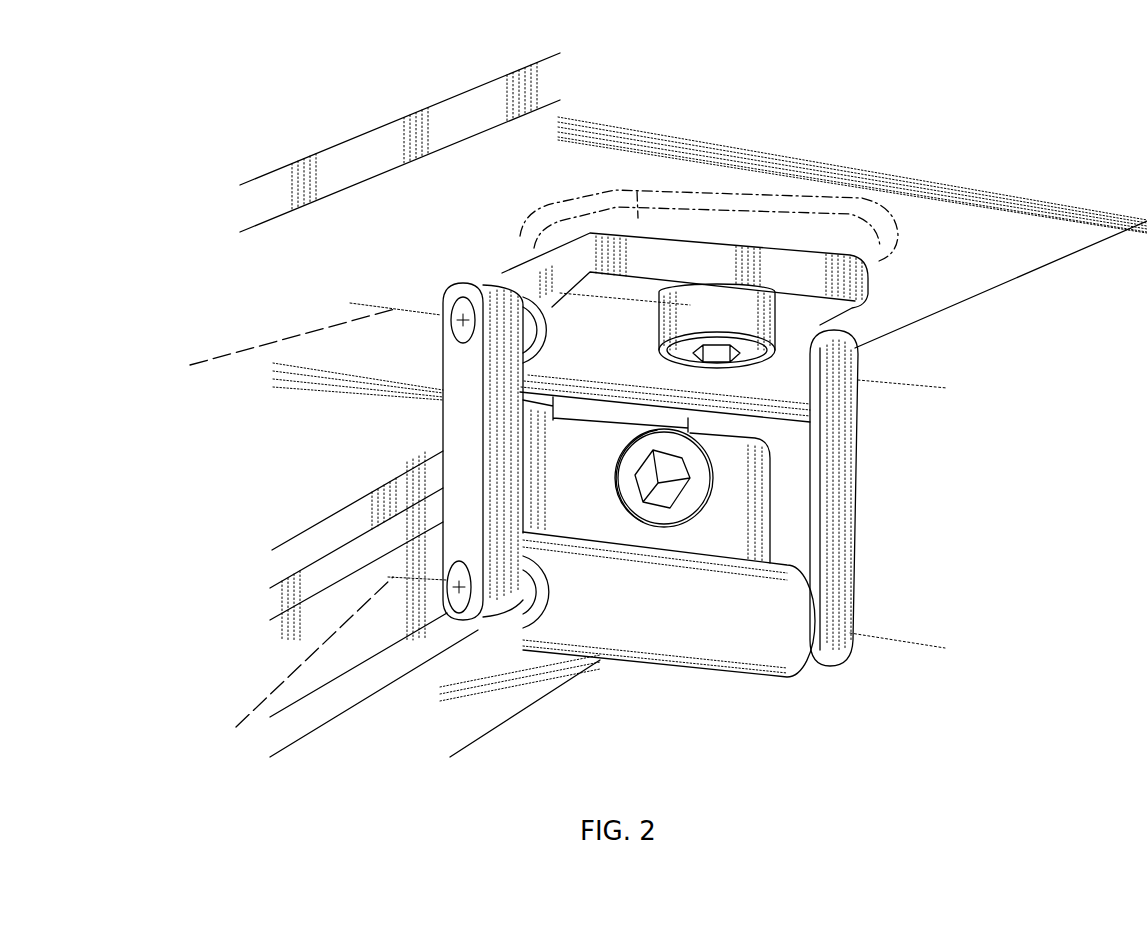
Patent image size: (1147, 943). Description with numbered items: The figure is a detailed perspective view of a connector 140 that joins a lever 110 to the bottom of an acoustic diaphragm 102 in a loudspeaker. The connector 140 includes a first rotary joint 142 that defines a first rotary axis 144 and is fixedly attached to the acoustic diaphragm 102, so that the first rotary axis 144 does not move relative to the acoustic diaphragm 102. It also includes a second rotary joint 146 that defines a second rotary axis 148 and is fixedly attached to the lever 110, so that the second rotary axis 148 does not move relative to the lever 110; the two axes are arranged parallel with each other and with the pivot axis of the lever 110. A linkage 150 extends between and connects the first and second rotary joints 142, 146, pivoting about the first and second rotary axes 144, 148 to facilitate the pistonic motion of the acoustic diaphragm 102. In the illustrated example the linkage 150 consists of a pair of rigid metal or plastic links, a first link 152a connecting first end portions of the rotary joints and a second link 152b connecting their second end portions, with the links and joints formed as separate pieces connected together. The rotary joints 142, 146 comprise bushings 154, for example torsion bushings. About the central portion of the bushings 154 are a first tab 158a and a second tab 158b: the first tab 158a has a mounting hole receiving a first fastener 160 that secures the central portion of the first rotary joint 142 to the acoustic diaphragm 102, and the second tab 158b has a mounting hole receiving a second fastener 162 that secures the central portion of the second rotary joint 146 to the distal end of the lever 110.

The acoustic diaphragm 102 is at (333, 147).
The lever 110 is at (517, 680).
The connector 140 is at (808, 474).
The first rotary joint 142 is at (690, 293).
The first rotary axis 144 is at (191, 366).
The second rotary joint 146 is at (653, 627).
The second rotary axis 148 is at (236, 728).
The linkage 150 is at (334, 451).
The first link 152a is at (465, 438).
The second link 152b is at (835, 457).
The bushings 154 is at (525, 296).
The first tab 158a is at (708, 248).
The second tab 158b is at (738, 514).
The first fastener 160 is at (732, 313).
The second fastener 162 is at (698, 474).